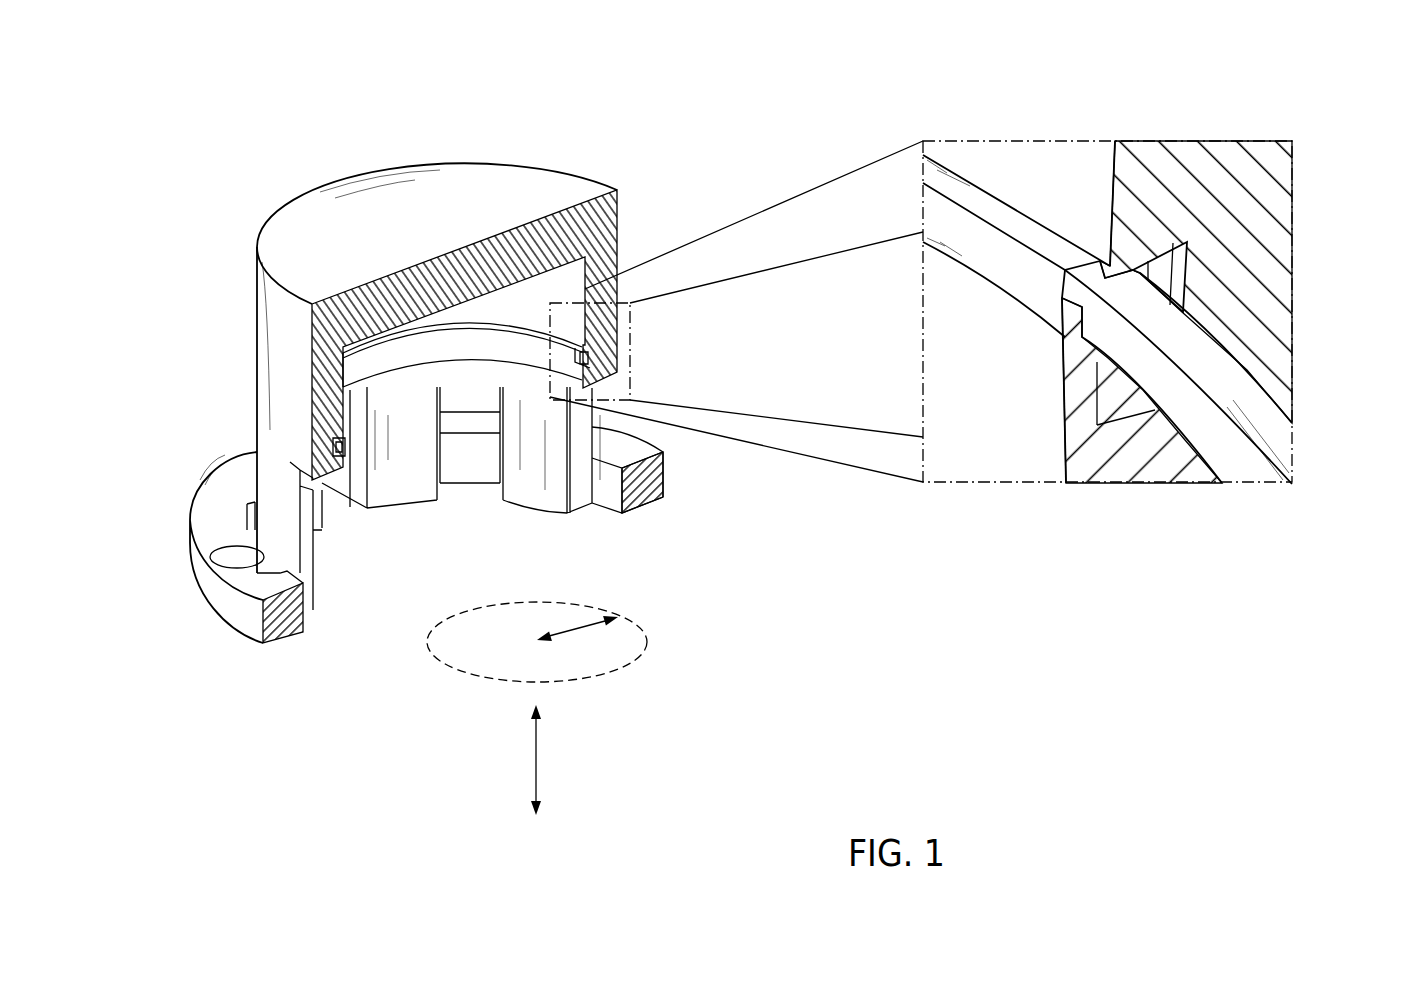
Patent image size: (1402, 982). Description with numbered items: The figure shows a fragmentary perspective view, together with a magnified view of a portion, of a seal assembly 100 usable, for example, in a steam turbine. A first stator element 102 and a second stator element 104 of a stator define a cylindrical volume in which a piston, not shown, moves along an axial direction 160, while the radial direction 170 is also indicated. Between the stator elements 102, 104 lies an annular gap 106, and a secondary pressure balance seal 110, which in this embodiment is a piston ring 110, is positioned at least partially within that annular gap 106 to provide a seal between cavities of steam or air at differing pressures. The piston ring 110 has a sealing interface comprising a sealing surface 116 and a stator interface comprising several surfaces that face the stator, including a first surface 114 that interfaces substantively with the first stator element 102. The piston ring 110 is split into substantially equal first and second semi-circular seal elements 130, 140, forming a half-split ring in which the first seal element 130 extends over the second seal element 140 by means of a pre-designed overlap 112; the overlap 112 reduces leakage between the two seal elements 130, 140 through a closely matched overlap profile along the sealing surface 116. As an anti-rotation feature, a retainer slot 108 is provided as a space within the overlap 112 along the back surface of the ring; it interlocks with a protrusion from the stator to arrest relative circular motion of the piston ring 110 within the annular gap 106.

The seal assembly 100 is at (266, 138).
The first stator element 102 is at (457, 170).
The second stator element 104 is at (612, 361).
The annular gap 106 is at (1200, 262).
The retainer slot 108 is at (1110, 268).
The secondary pressure balance seal 110 is at (1008, 208).
The pre-designed overlap 112 is at (1077, 297).
The first surface 114 is at (1255, 407).
The sealing surface 116 is at (1193, 428).
The first semi-circular seal element 130 is at (524, 336).
The second semi-circular seal element 140 is at (1175, 355).
The axial direction 160 is at (537, 760).
The radial direction 170 is at (582, 628).